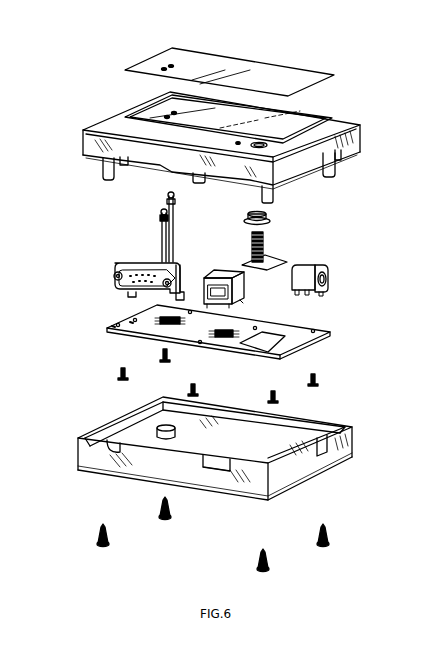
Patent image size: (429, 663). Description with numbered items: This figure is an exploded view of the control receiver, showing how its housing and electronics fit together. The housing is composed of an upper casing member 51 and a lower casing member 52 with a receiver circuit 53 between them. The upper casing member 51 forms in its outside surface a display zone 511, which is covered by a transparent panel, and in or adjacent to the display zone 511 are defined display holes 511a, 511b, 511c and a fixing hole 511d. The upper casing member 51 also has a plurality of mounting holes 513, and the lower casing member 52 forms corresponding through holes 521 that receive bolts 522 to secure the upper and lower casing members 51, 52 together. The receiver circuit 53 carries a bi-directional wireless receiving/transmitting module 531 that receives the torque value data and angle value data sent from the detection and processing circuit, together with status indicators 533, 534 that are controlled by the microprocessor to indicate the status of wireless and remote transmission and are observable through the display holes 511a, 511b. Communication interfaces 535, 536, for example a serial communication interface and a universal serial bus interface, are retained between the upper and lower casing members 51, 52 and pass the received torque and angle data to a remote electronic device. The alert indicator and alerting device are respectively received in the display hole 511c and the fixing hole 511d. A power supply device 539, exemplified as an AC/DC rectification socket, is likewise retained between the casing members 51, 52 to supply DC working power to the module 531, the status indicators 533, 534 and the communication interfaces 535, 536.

The upper casing member 51 is at (348, 142).
The display zone 511 is at (307, 125).
The display hole 511a is at (167, 116).
The display hole 511b is at (173, 112).
The display hole 511c is at (293, 77).
The fixing hole 511d is at (277, 157).
The mounting hole 513 is at (102, 167).
The lower casing member 52 is at (337, 460).
The through hole 521 is at (160, 428).
The bolt 522 is at (100, 530).
The receiver circuit 53 is at (112, 327).
The bi-directional wireless receiving/transmitting module 531 is at (273, 255).
The status indicator 533 is at (161, 213).
The status indicator 534 is at (168, 195).
The communication interface 535 is at (118, 288).
The communication interface 536 is at (223, 273).
The power supply device 539 is at (327, 289).